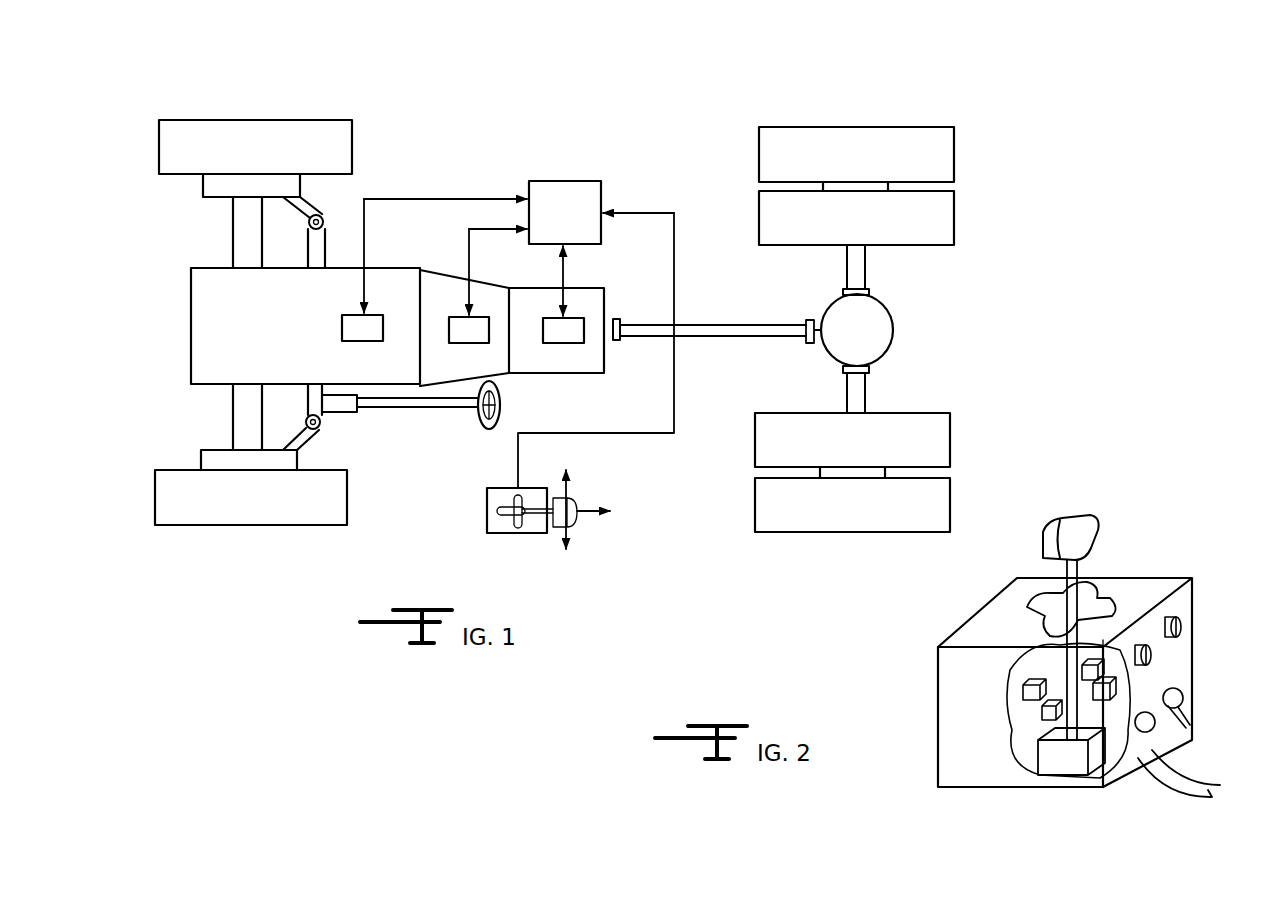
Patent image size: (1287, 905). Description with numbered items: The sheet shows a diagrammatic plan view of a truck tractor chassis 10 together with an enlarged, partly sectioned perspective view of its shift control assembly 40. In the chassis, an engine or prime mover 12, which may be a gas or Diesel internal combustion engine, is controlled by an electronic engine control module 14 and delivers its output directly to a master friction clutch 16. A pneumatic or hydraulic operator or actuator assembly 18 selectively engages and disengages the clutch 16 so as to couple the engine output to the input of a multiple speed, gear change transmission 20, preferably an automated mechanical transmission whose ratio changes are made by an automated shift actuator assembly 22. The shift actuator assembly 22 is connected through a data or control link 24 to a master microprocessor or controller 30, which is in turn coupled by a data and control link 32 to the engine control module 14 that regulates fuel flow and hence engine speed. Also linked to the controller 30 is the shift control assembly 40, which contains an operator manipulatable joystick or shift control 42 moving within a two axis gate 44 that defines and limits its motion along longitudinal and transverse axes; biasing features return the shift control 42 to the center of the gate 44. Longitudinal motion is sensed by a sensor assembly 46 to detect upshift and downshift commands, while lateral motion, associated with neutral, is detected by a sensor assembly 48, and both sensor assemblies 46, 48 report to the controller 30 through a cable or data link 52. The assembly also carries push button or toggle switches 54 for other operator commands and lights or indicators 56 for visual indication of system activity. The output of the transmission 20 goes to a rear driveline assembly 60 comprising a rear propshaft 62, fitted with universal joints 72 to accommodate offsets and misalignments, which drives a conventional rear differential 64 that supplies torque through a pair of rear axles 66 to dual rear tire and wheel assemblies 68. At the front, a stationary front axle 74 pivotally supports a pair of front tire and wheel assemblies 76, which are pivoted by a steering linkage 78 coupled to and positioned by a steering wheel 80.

In FIG. 1, the truck tractor chassis 10 is at (483, 112).
In FIG. 1, the engine or prime mover 12 is at (203, 340).
In FIG. 1, the electronic engine control module 14 is at (345, 325).
In FIG. 1, the master friction clutch 16 is at (441, 282).
In FIG. 1, the operator or actuator assembly 18 is at (470, 337).
In FIG. 1, the multiple speed, gear change transmission 20 is at (571, 366).
In FIG. 1, the shift actuator assembly 22 is at (572, 325).
In FIG. 1, the data or control link 24 is at (562, 270).
In FIG. 1, the master microprocessor or controller 30 is at (563, 192).
In FIG. 1, the data and control link 32 is at (462, 197).
In FIG. 1, the shift control assembly 40 is at (471, 544).
In FIG. 2, the shift control assembly 40 is at (922, 655).
In FIG. 2, the joystick or shift control 42 is at (1082, 577).
In FIG. 2, the two axis gate 44 is at (1040, 605).
In FIG. 2, the sensor assembly 46 is at (1021, 688).
In FIG. 2, the sensor assembly 48 is at (1090, 660).
In FIG. 1, the cable or data link 52 is at (607, 433).
In FIG. 2, the cable or data link 52 is at (1175, 785).
In FIG. 2, the push button or toggle switches 54 is at (1152, 653).
In FIG. 2, the lights or indicators 56 is at (1192, 727).
In FIG. 1, the rear driveline assembly 60 is at (722, 120).
In FIG. 1, the rear propshaft 62 is at (767, 323).
In FIG. 1, the rear differential 64 is at (877, 333).
In FIG. 1, the rear axles 66 is at (855, 260).
In FIG. 1, the rear tire and wheel assemblies 68 is at (913, 115).
In FIG. 1, the universal joints 72 is at (617, 318).
In FIG. 1, the stationary front axle 74 is at (240, 415).
In FIG. 1, the front tire and wheel assemblies 76 is at (268, 117).
In FIG. 1, the steering linkage 78 is at (323, 430).
In FIG. 1, the steering wheel 80 is at (473, 418).